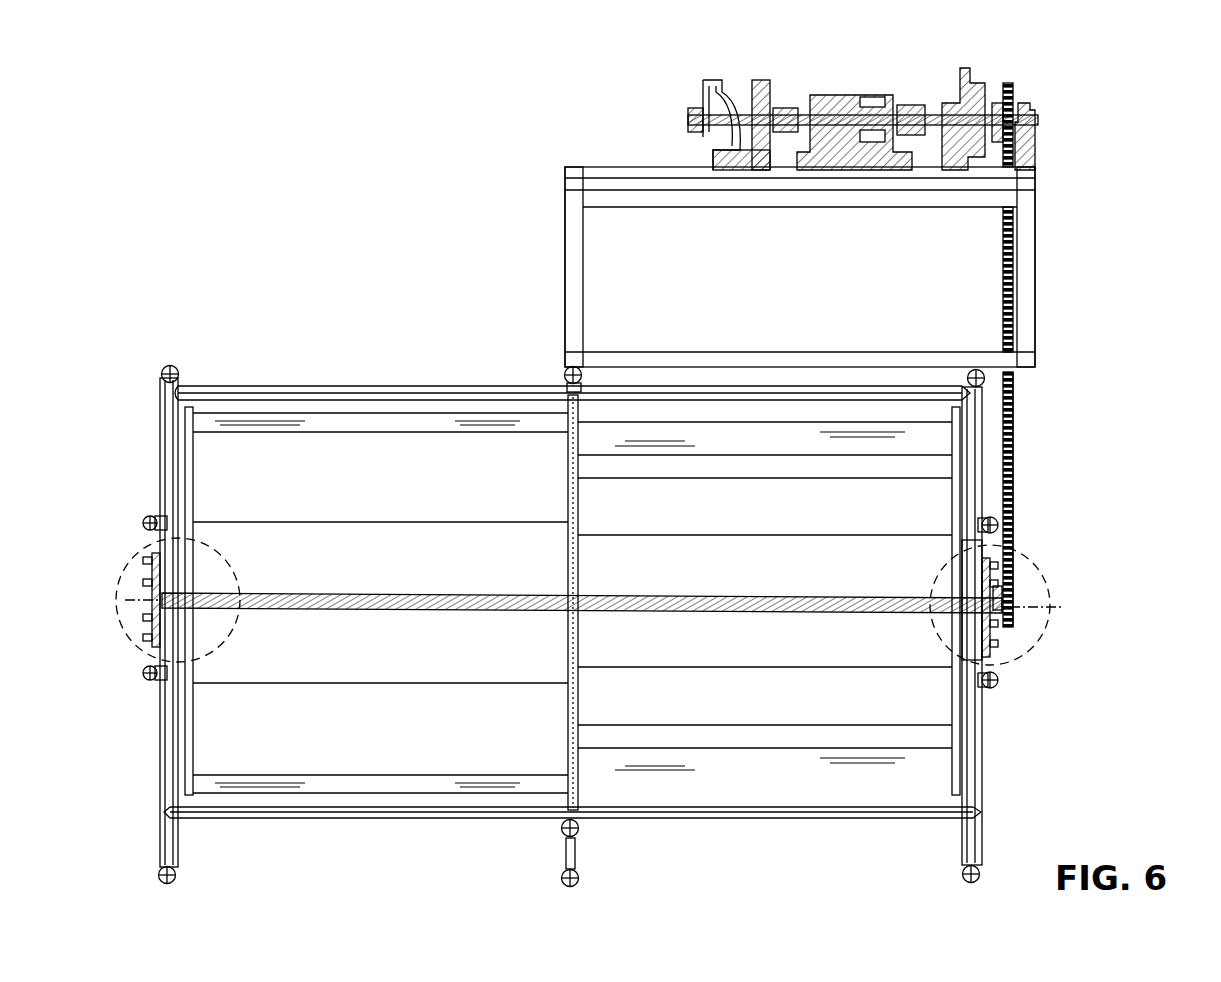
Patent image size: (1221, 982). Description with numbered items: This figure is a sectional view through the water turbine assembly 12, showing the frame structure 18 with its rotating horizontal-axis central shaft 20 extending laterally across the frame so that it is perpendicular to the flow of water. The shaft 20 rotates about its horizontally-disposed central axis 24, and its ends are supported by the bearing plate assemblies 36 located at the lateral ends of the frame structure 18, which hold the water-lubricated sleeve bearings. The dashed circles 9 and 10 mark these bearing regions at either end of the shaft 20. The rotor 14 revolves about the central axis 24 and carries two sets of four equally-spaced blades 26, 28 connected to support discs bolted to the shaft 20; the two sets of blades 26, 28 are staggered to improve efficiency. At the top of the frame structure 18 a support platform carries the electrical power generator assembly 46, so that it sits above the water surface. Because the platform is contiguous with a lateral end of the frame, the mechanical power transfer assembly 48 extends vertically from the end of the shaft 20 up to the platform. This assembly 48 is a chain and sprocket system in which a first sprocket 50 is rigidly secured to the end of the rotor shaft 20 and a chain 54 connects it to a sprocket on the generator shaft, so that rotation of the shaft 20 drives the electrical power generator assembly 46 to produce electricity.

The water turbine assembly 12 is at (274, 252).
The frame structure 18 is at (273, 380).
The rotor 14 is at (408, 407).
The blades 26 is at (473, 417).
The central shaft 20 is at (270, 592).
The bearing plate assemblies 36 is at (150, 575).
The detail region of FIG. 9 is at (118, 612).
The detail region of FIG. 10 is at (1050, 580).
The central axis 24 is at (992, 634).
The first sprocket 50 is at (998, 590).
The mechanical power transfer assembly 48 is at (1024, 395).
The chain 54 is at (1014, 470).
The electrical power generator assembly 46 is at (824, 86).
The blades 28 is at (830, 786).